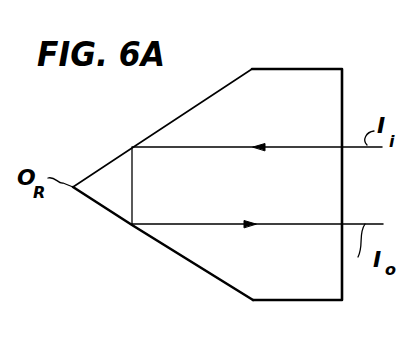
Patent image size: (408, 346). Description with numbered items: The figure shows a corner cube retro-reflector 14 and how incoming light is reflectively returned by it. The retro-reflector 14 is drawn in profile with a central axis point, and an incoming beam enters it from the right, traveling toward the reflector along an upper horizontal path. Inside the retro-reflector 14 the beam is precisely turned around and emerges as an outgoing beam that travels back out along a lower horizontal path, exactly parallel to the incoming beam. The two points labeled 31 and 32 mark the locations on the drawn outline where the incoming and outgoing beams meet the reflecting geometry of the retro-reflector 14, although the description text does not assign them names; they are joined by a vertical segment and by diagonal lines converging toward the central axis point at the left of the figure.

The corner cube retro-reflector 14 is at (289, 292).
The input node 31 is at (131, 146).
The output node 32 is at (131, 227).